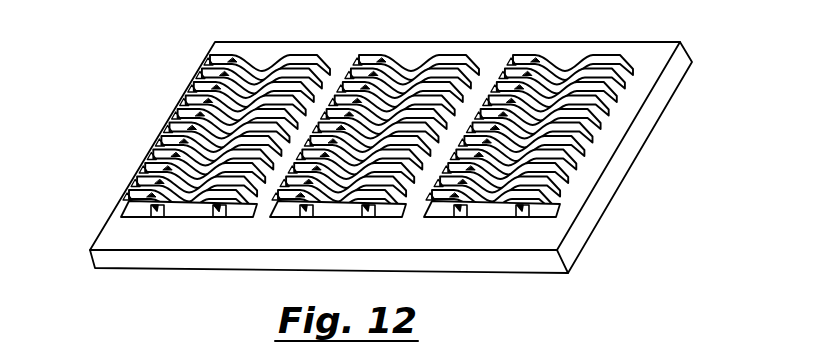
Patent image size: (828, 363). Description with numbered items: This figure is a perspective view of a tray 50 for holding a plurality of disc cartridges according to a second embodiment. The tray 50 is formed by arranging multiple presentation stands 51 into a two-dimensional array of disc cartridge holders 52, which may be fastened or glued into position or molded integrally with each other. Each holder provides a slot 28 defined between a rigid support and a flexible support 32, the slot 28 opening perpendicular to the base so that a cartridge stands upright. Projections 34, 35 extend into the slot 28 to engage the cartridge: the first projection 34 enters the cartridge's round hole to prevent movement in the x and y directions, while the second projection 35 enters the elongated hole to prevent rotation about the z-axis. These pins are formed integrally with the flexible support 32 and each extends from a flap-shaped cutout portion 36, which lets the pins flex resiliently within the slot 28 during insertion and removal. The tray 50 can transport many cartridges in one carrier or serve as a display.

The tray 50 is at (133, 100).
The slot 28 is at (150, 197).
The flexible support 32 is at (133, 208).
The projection 34 is at (155, 212).
The projection 35 is at (222, 213).
The flap-shaped cutout portion 36 is at (213, 212).
The presentation stand 51 is at (598, 57).
The disc cartridge holder 52 is at (508, 210).